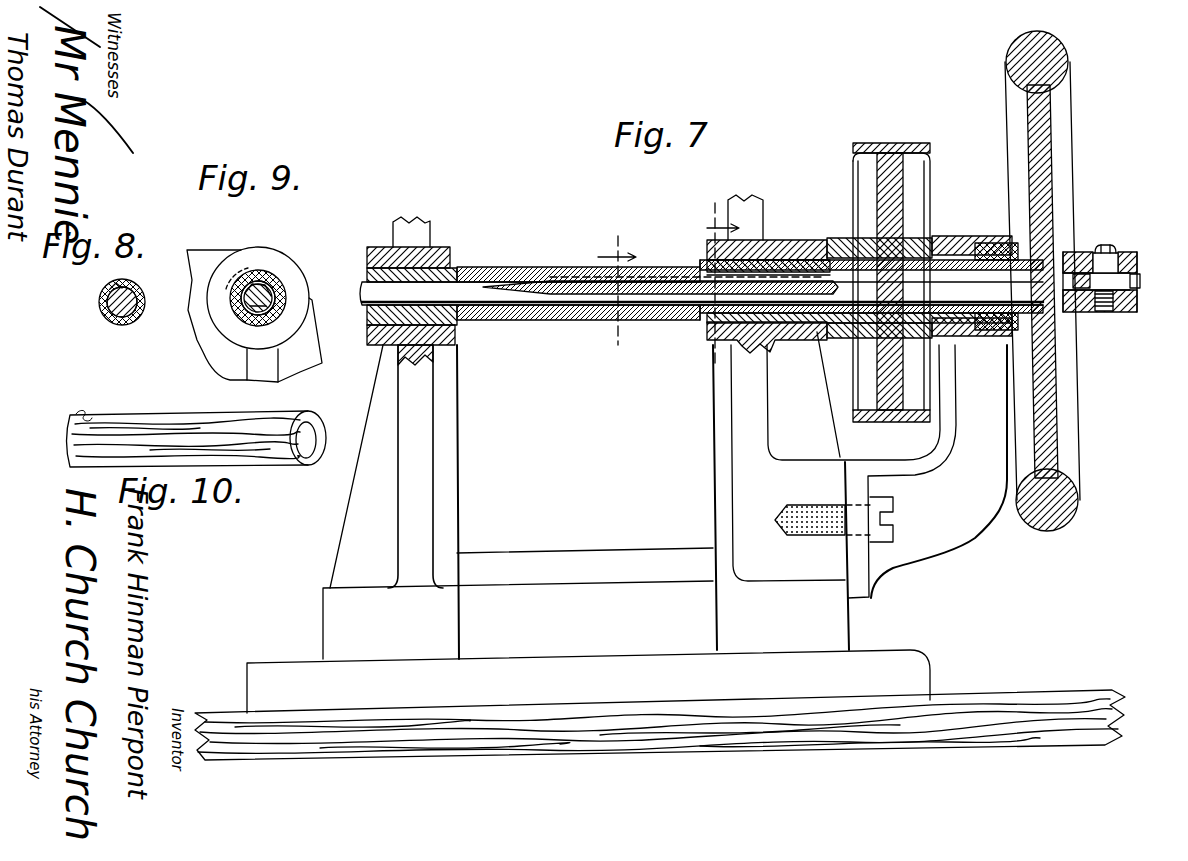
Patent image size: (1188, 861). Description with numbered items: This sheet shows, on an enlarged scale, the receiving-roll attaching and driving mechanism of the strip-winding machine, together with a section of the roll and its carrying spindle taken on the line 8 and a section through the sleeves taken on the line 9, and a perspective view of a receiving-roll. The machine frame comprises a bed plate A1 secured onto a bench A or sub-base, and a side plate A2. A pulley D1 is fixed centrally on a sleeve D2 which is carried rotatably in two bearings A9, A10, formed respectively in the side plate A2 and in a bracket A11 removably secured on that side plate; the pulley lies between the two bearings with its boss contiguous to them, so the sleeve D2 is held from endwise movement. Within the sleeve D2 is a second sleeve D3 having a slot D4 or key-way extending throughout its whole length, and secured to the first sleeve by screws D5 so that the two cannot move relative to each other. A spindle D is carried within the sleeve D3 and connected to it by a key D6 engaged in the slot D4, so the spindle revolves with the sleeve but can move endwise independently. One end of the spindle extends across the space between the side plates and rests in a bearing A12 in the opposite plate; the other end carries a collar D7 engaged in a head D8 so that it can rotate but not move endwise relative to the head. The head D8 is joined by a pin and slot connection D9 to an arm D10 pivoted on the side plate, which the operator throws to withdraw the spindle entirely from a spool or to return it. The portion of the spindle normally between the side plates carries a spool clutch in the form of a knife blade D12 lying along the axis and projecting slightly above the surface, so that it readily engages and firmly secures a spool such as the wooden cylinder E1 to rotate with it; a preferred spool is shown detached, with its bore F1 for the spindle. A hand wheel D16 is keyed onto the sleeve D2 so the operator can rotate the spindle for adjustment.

In FIG. 7, the bench A is at (1010, 690).
In FIG. 7, the bed plate A1 is at (907, 640).
In FIG. 7, the side plate A2 is at (713, 493).
In FIG. 9, the side plate A2 is at (305, 367).
In FIG. 7, the bearing A9 is at (790, 263).
In FIG. 9, the bearing A9 is at (316, 322).
In FIG. 7, the bearing A10 is at (972, 265).
In FIG. 7, the bracket A11 is at (955, 530).
In FIG. 7, the bearing A12 is at (452, 260).
In FIG. 7, the spindle D is at (672, 300).
In FIG. 9, the spindle D is at (237, 310).
In FIG. 8, the spindle D is at (141, 296).
In FIG. 7, the pulley D1 is at (891, 268).
In FIG. 7, the sleeve D2 is at (815, 262).
In FIG. 9, the sleeve D2 is at (290, 311).
In FIG. 7, the second sleeve D3 is at (810, 320).
In FIG. 9, the second sleeve D3 is at (288, 286).
In FIG. 7, the slot D4 is at (990, 229).
In FIG. 9, the slot D4 is at (254, 283).
In FIG. 9, the screws D5 is at (236, 272).
In FIG. 7, the key D6 is at (816, 276).
In FIG. 9, the key D6 is at (270, 285).
In FIG. 7, the collar D7 is at (1075, 253).
In FIG. 7, the head D8 is at (1083, 308).
In FIG. 7, the pin and slot connection D9 is at (1110, 253).
In FIG. 7, the arm D10 is at (1142, 273).
In FIG. 7, the knife blade D12 is at (563, 280).
In FIG. 8, the knife blade D12 is at (102, 299).
In FIG. 7, the hand wheel D16 is at (1047, 500).
In FIG. 7, the wooden cylinder E1 is at (558, 308).
In FIG. 8, the wooden cylinder E1 is at (113, 318).
In FIG. 10, the tube F1 is at (280, 458).
In FIG. 7, the section line 8- 8 is at (617, 291).
In FIG. 7, the section line 9- 9 is at (721, 290).